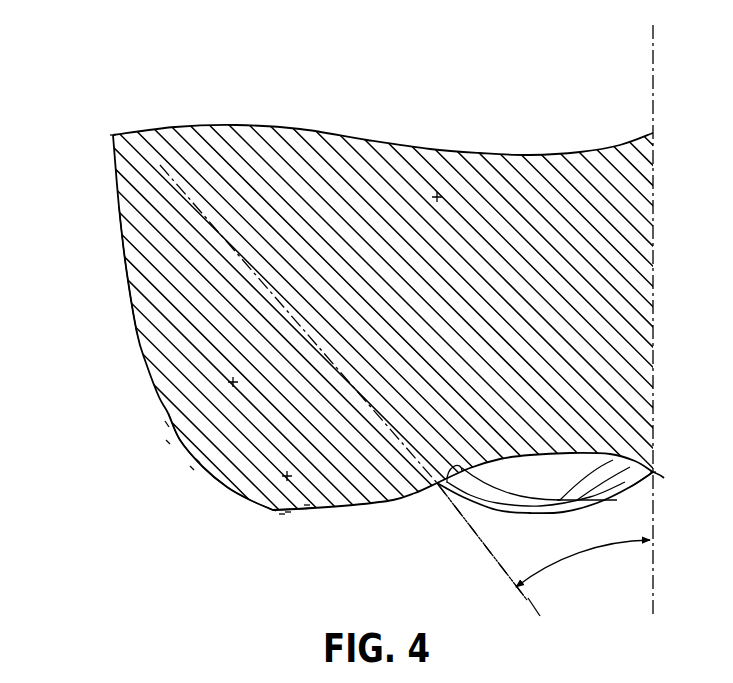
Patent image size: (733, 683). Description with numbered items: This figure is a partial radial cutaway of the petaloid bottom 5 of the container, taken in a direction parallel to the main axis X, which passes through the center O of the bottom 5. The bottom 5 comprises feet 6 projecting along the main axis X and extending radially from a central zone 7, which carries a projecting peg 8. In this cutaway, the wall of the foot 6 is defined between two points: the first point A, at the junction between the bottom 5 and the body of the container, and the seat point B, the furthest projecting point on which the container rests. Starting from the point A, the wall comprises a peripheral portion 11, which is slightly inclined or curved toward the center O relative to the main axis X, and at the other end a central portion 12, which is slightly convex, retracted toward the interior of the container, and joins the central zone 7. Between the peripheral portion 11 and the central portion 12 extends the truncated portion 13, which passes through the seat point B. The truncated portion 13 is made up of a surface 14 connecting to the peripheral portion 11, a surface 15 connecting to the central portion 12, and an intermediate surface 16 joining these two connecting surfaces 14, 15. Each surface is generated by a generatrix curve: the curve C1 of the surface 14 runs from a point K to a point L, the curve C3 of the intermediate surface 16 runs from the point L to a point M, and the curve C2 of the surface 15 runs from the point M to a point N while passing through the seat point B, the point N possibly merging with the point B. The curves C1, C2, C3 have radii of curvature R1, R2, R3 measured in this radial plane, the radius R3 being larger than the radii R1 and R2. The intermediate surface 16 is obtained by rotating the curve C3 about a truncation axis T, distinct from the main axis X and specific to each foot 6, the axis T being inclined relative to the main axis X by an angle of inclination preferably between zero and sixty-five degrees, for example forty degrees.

The bottom 5 is at (237, 118).
The foot 6 is at (128, 358).
The central zone 7 is at (621, 436).
The projecting peg 8 is at (640, 488).
The peripheral portion 11 is at (132, 294).
The central portion 12 is at (440, 482).
The truncated portion 13 is at (229, 475).
The connecting surface to the peripheral portion 14 is at (166, 427).
The connecting surface to the central portion 15 is at (276, 513).
The intermediate surface 16 is at (205, 470).
The first point A is at (113, 135).
The seat point B is at (288, 514).
The point K is at (166, 424).
The point L is at (198, 460).
The point M is at (268, 510).
The point N is at (307, 506).
The center of the bottom O is at (657, 470).
The truncation axis T is at (526, 603).
The main axis X is at (653, 38).
The generatrix curve C1 is at (168, 442).
The generatrix curve C2 is at (282, 516).
The generatrix curve C3 is at (191, 468).
The radius of curvature R1 is at (233, 382).
The radius of curvature R2 is at (287, 476).
The radius of curvature R3 is at (437, 197).